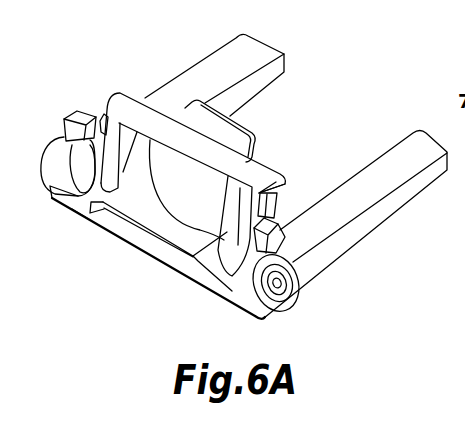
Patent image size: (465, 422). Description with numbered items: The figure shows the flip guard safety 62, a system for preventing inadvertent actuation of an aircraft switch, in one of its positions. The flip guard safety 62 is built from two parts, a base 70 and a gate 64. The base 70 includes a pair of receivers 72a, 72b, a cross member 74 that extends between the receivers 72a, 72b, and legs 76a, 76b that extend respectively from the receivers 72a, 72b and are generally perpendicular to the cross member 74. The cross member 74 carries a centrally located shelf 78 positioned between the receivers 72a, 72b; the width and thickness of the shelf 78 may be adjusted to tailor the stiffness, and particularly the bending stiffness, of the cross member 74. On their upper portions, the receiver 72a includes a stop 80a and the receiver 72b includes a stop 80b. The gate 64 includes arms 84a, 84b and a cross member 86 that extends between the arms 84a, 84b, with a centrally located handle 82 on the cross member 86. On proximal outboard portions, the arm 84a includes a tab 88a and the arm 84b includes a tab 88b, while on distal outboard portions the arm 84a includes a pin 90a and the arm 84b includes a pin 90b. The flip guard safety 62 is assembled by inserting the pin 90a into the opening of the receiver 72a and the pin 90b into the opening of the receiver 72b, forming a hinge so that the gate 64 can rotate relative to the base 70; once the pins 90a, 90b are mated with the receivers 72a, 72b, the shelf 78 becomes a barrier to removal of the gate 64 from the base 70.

The flip guard safety 62 is at (283, 46).
The gate 64 is at (136, 100).
The base 70 is at (241, 37).
The receiver 72a is at (52, 158).
The receiver 72b is at (249, 288).
The cross member 74 is at (126, 235).
The leg 76a is at (200, 69).
The leg 76b is at (400, 156).
The shelf 78 is at (168, 228).
The stop 80a is at (74, 116).
The stop 80b is at (290, 238).
The handle 82 is at (240, 114).
The arm 84a is at (106, 222).
The arm 84b is at (197, 262).
The cross member 86 is at (257, 172).
The tab 88a is at (100, 116).
The tab 88b is at (277, 210).
The pin 90a is at (77, 212).
The pin 90b is at (283, 302).